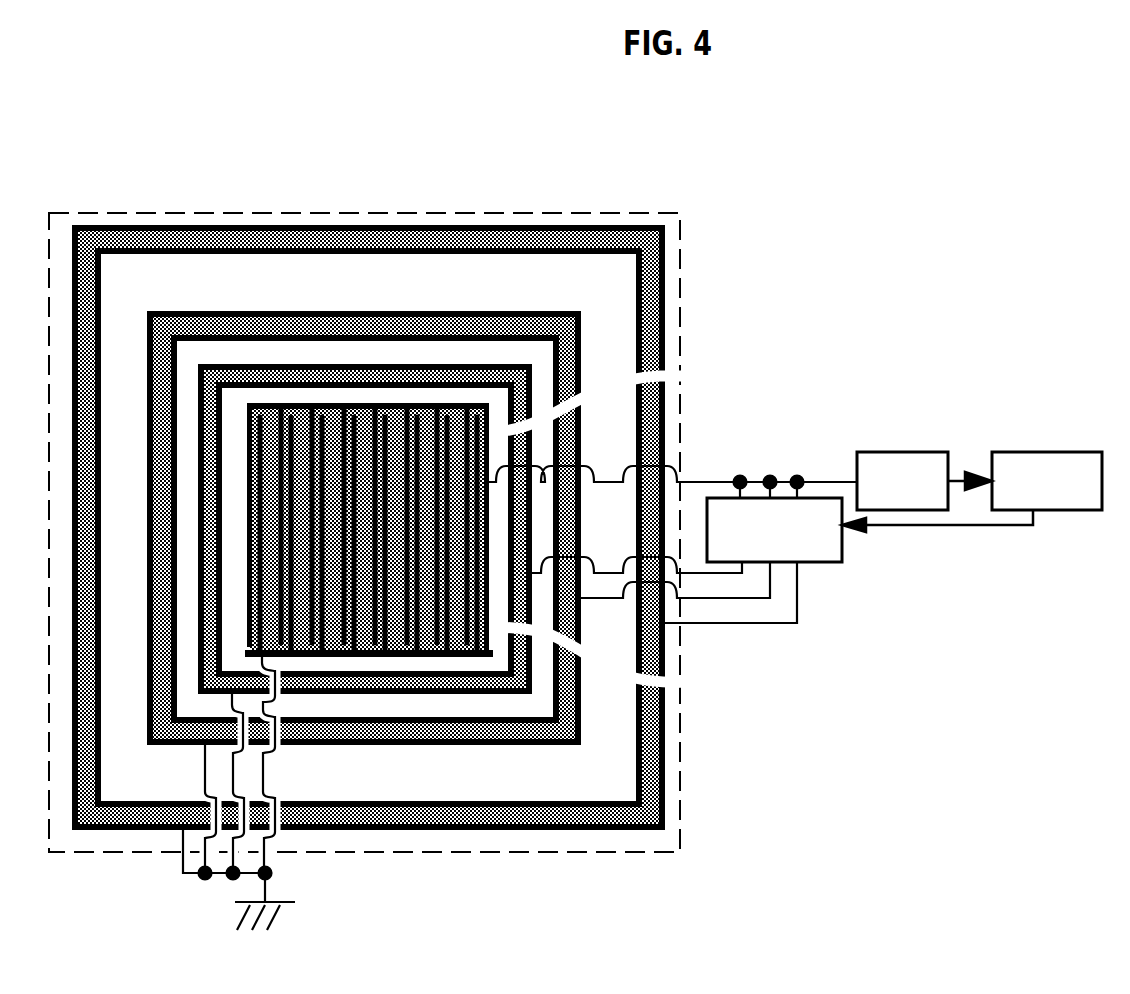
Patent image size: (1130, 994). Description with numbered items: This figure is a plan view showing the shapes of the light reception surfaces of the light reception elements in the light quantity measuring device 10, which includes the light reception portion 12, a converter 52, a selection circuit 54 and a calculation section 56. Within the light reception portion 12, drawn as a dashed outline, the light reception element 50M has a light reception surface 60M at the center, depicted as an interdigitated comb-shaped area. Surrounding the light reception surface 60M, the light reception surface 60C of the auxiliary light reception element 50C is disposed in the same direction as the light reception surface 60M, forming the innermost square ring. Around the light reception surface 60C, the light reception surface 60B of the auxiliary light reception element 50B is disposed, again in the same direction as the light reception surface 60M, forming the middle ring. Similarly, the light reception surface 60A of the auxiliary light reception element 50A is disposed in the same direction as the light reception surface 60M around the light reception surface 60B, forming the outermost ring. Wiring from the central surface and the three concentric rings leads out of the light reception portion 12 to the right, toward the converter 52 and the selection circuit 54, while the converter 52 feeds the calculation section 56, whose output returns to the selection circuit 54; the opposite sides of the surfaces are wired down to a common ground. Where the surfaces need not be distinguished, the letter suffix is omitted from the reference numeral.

The light quantity measuring device 10 is at (538, 120).
The light reception portion 12 is at (343, 212).
The auxiliary light reception element 50A is at (240, 255).
The auxiliary light reception element 50B is at (388, 312).
The auxiliary light reception element 50C is at (470, 364).
The light reception element 50M is at (487, 432).
The light reception surface 60A is at (593, 801).
The light reception surface 60B is at (360, 745).
The light reception surface 60C is at (452, 695).
The light reception surface 60M is at (487, 627).
The converter 52 is at (880, 452).
The selection circuit 54 is at (835, 562).
The calculation section 56 is at (1017, 452).